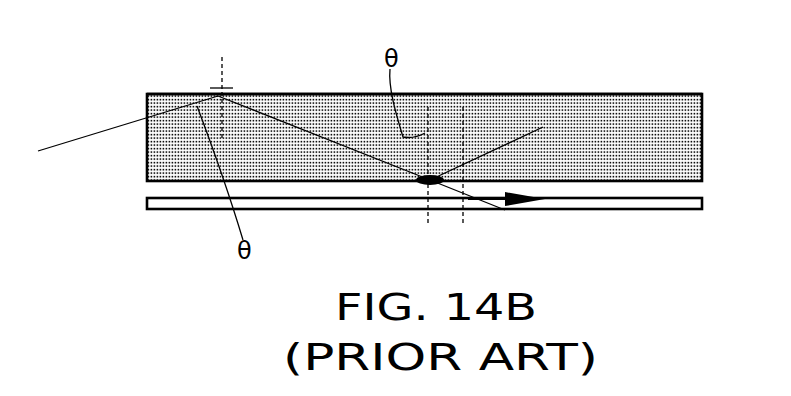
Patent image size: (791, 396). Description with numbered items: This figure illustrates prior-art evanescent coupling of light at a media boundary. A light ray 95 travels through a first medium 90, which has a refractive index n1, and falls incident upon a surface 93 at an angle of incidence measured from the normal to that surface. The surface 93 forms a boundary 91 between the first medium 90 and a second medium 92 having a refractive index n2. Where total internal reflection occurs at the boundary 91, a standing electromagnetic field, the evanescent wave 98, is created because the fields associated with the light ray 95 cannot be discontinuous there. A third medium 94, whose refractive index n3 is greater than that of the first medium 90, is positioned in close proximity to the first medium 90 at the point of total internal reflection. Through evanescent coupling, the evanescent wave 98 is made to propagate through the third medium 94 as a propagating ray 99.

The first medium 90 is at (290, 107).
The boundary 91 is at (337, 95).
The second medium 92 is at (636, 74).
The surface 93 is at (255, 94).
The third medium 94 is at (702, 209).
The light ray 95 is at (108, 128).
The evanescent wave 98 is at (418, 183).
The propagating ray 99 is at (490, 200).